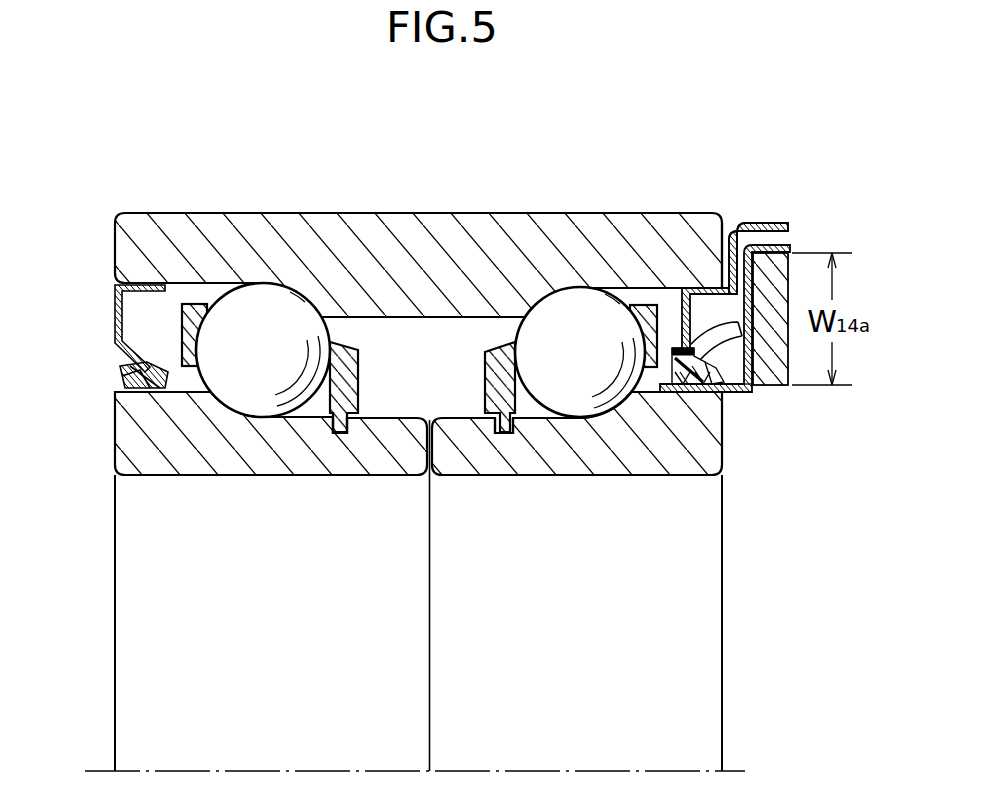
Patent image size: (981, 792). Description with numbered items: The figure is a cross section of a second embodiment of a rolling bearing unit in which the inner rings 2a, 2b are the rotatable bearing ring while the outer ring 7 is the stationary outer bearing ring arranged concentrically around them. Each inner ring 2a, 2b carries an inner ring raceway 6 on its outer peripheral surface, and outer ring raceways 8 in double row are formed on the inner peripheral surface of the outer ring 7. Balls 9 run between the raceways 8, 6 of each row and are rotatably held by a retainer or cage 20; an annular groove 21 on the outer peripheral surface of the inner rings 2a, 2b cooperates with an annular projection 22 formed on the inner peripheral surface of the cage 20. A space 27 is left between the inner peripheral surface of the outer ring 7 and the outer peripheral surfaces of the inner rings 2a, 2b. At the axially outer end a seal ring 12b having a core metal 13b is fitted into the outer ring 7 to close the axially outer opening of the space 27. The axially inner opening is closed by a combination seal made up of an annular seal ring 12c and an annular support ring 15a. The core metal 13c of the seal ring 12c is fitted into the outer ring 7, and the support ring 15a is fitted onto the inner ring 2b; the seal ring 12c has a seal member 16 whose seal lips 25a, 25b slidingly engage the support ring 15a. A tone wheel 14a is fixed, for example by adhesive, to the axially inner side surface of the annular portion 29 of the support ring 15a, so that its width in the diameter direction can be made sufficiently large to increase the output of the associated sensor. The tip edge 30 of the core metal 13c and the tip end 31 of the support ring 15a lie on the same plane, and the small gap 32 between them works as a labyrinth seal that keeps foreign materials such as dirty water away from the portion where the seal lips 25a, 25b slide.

The outer ring 7 is at (444, 253).
The space 27 is at (374, 345).
The inner ring 2a is at (258, 455).
The inner ring 2b is at (660, 455).
The retainer or cage 20 is at (468, 418).
The annular groove 21 is at (352, 436).
The inner ring raceway 6 is at (228, 397).
The annular projection 22 is at (333, 435).
The outer ring raceway 8 is at (278, 298).
The ball 9 is at (222, 318).
The core metal 13b is at (115, 340).
The seal ring 12b is at (115, 308).
The core metal 13c is at (693, 283).
The small gap 32 is at (757, 238).
The tip edge 30 is at (790, 227).
The support ring 15a is at (725, 222).
The tip end 31 is at (792, 240).
The tone wheel 14a is at (792, 253).
The annular portion 29 is at (753, 387).
The seal ring 12c is at (730, 395).
The seal lip 25a is at (745, 390).
The seal lip 25b is at (698, 390).
The seal member 16 is at (736, 392).